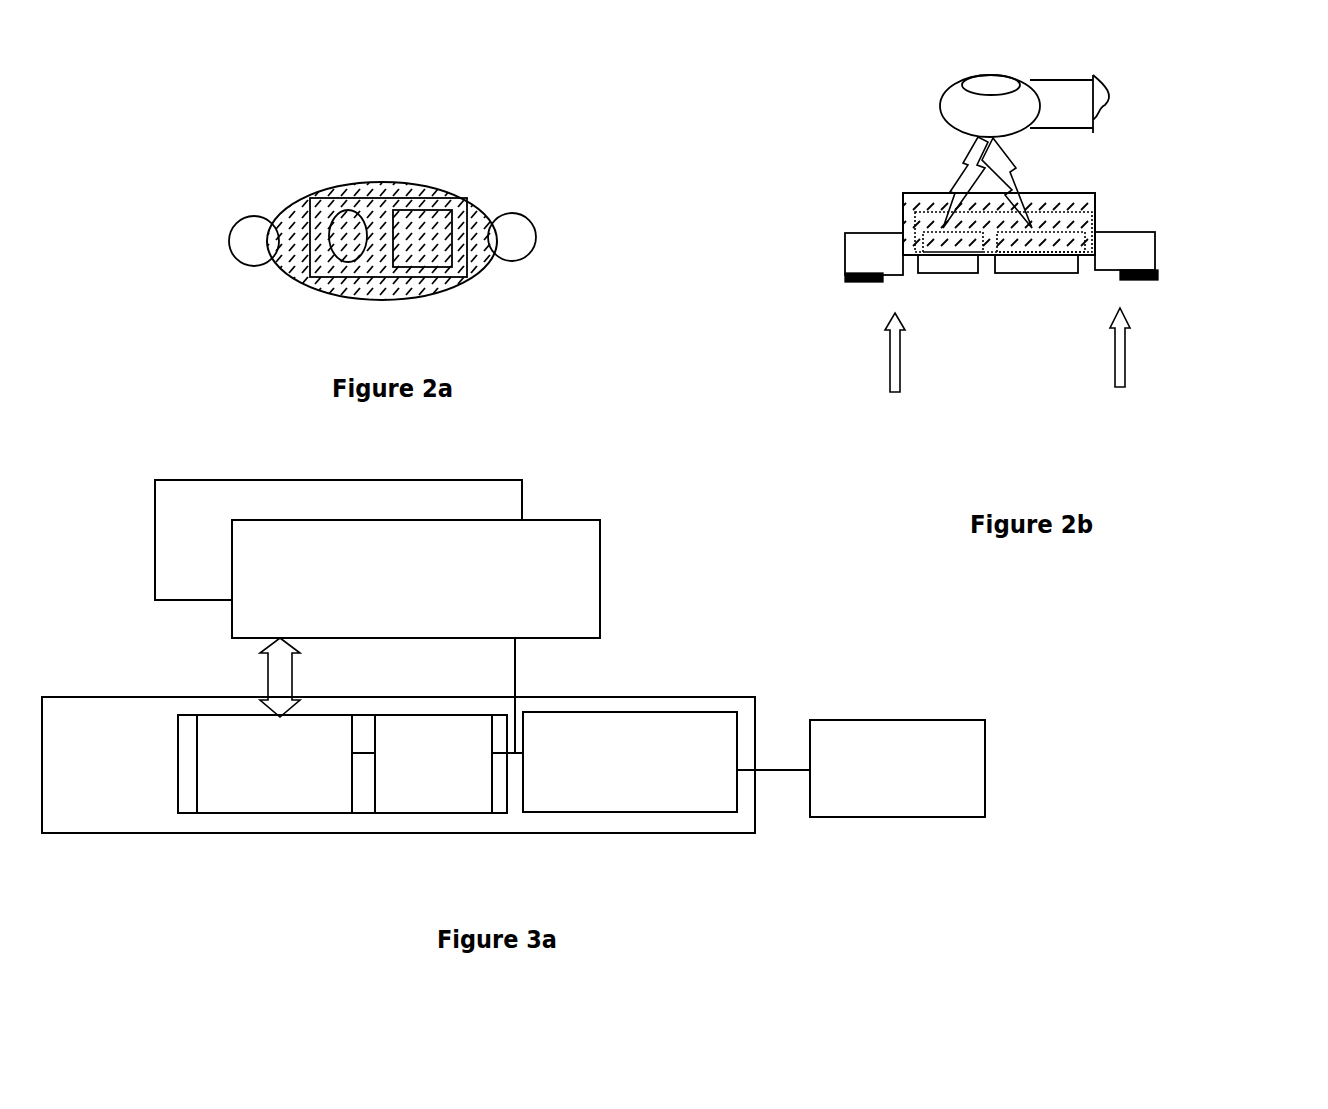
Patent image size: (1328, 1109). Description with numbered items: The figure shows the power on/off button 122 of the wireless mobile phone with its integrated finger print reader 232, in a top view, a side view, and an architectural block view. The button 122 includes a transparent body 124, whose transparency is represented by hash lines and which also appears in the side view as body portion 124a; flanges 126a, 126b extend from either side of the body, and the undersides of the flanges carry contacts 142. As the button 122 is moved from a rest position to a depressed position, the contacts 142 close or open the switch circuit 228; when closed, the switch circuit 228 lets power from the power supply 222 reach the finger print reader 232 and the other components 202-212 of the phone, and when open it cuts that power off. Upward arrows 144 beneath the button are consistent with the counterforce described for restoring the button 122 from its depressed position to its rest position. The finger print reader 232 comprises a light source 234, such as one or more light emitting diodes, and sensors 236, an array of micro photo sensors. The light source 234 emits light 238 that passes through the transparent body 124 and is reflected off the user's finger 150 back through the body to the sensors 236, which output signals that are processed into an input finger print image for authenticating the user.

In FIG. 2A, the power on/off button 122 is at (130, 105).
In FIG. 2B, the power on/off button 122 is at (767, 100).
In FIG. 3A, the power on/off button 122 is at (95, 826).
In FIG. 2A, the transparent body 124 is at (288, 268).
In FIG. 2B, the transparent body 124a is at (900, 202).
In FIG. 2A, the flange 126a is at (268, 235).
In FIG. 2B, the flange 126a is at (857, 263).
In FIG. 2A, the flange 126b is at (532, 237).
In FIG. 2B, the flange 126b is at (1157, 235).
In FIG. 2B, the contacts 142 is at (858, 288).
In FIG. 2B, the power flow direction arrows 144 is at (1115, 370).
In FIG. 2B, the finger 150 is at (1006, 121).
In FIG. 3A, the other components 202-212 is at (530, 617).
In FIG. 3A, the power supply 222 is at (916, 786).
In FIG. 3A, the switch circuit 228 is at (646, 781).
In FIG. 2A, the finger print reader 232 is at (365, 202).
In FIG. 2B, the finger print reader 232 is at (1085, 192).
In FIG. 3A, the finger print reader 232 is at (178, 793).
In FIG. 2A, the light source 234 is at (342, 232).
In FIG. 2B, the light source 234 is at (935, 262).
In FIG. 3A, the light source 234 is at (451, 782).
In FIG. 2A, the sensors 236 is at (447, 215).
In FIG. 2B, the sensors 236 is at (1015, 262).
In FIG. 3A, the sensors 236 is at (319, 784).
In FIG. 2B, the light beams 238 is at (980, 148).